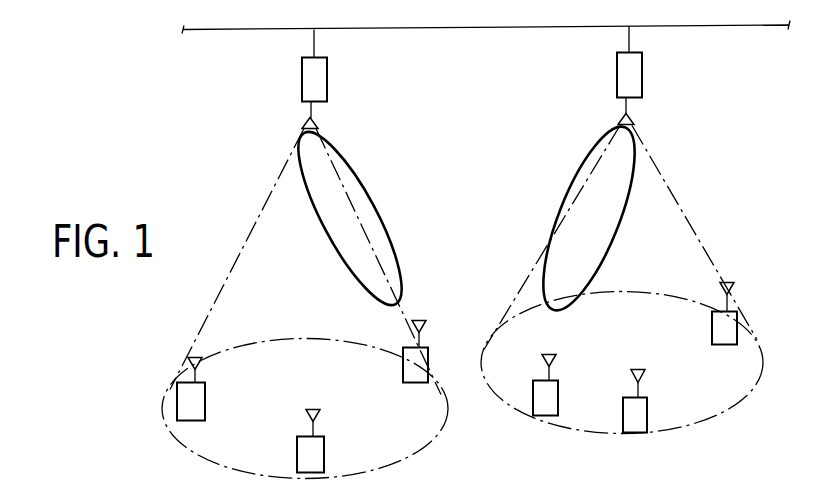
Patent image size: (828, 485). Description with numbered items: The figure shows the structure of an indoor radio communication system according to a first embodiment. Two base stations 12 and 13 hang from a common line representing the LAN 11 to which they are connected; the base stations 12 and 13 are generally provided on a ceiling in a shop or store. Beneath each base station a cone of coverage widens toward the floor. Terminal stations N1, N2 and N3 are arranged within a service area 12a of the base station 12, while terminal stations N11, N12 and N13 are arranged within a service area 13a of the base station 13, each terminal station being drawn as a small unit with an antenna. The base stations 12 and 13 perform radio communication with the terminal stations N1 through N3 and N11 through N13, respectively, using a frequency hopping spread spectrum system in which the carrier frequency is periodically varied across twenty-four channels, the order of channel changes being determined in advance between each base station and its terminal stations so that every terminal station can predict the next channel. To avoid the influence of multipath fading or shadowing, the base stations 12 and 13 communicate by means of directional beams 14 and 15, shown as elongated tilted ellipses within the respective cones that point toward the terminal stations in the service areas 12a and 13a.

The LAN 11 is at (758, 26).
The base station 12 is at (327, 77).
The base station 13 is at (642, 75).
The directional beam 14 is at (352, 164).
The directional beam 15 is at (590, 165).
The service area 12a is at (162, 408).
The service area 13a is at (757, 385).
The terminal station N1 is at (205, 392).
The terminal station N2 is at (324, 447).
The terminal station N3 is at (403, 362).
The terminal station N11 is at (558, 388).
The terminal station N12 is at (647, 410).
The terminal station N13 is at (712, 325).